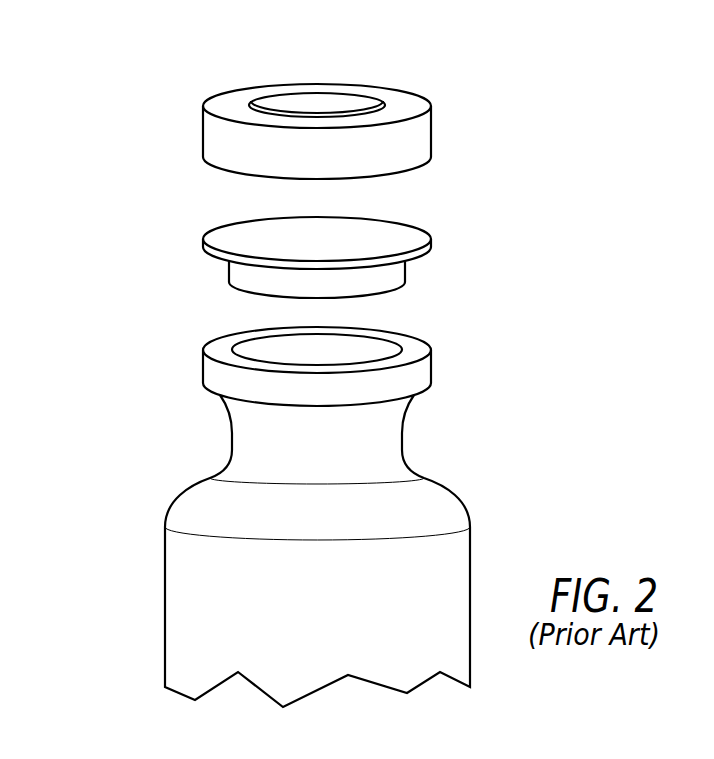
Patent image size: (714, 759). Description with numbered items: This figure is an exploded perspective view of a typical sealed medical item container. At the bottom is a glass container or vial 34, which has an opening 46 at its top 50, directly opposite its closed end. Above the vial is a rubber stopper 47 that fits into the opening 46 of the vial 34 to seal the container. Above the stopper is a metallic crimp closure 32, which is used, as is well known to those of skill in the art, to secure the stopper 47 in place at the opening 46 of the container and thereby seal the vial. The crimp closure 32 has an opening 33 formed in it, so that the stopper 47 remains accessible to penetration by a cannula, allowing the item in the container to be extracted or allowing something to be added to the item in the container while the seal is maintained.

The crimp closure 32 is at (203, 132).
The opening 33 is at (317, 112).
The rubber stopper 47 is at (203, 236).
The top 50 is at (432, 352).
The opening 46 is at (267, 357).
The glass container or vial 34 is at (165, 563).